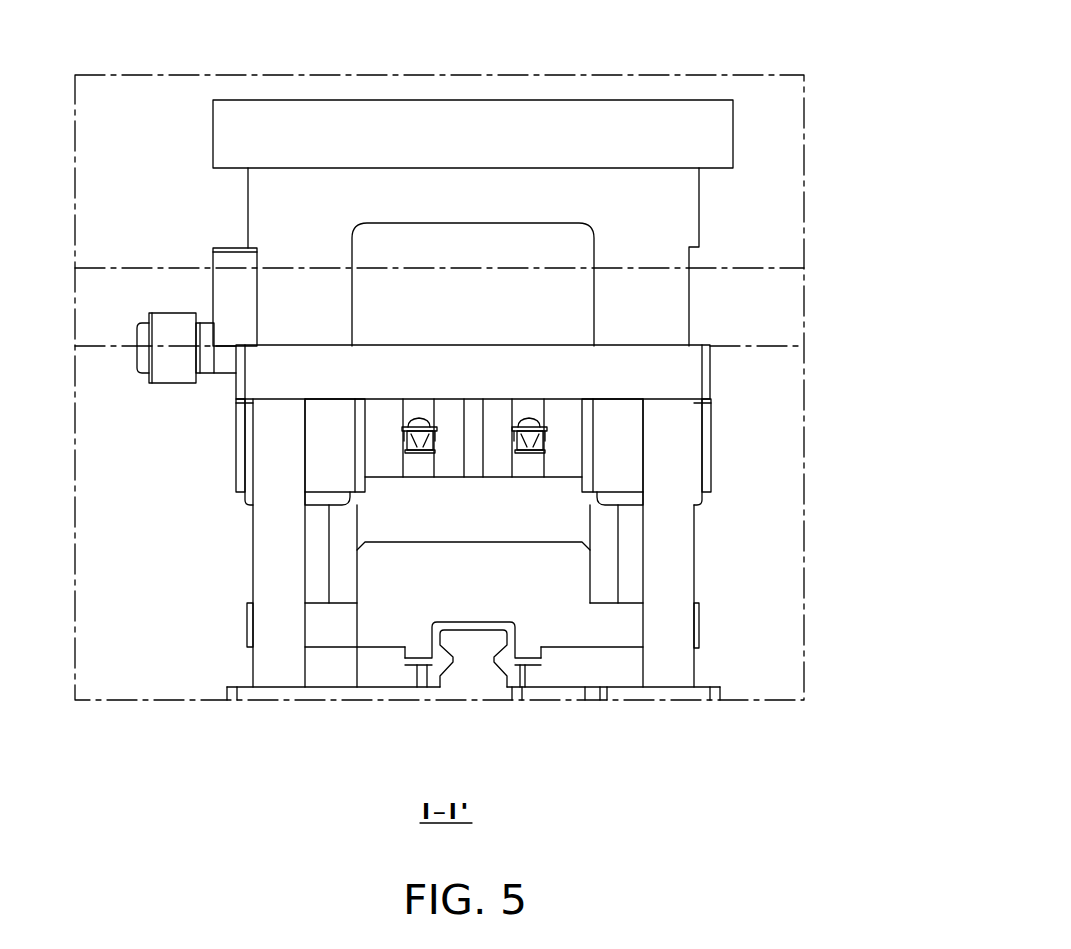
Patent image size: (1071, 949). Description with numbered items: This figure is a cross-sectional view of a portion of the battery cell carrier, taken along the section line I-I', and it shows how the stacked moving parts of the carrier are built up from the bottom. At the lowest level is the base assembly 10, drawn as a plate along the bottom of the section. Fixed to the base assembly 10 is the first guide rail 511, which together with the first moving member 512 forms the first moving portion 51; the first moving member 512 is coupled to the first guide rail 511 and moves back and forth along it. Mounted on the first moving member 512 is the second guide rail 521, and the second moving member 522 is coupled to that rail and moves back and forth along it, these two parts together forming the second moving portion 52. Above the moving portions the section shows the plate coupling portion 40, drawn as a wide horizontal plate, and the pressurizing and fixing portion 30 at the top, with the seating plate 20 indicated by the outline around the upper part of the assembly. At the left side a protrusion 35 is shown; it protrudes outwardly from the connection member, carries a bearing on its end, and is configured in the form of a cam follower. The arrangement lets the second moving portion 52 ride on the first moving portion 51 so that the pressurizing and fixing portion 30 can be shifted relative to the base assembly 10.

The base assembly 10 is at (342, 697).
The seating plate 20 is at (764, 268).
The pressurizing and fixing portion 30 is at (636, 98).
The protrusion 35 is at (173, 372).
The plate coupling portion 40 is at (675, 430).
The first moving portion 51 is at (895, 583).
The first guide rail 511 is at (495, 675).
The first moving member 512 is at (535, 612).
The second moving portion 52 is at (907, 440).
The second guide rail 521 is at (629, 520).
The second moving member 522 is at (612, 459).